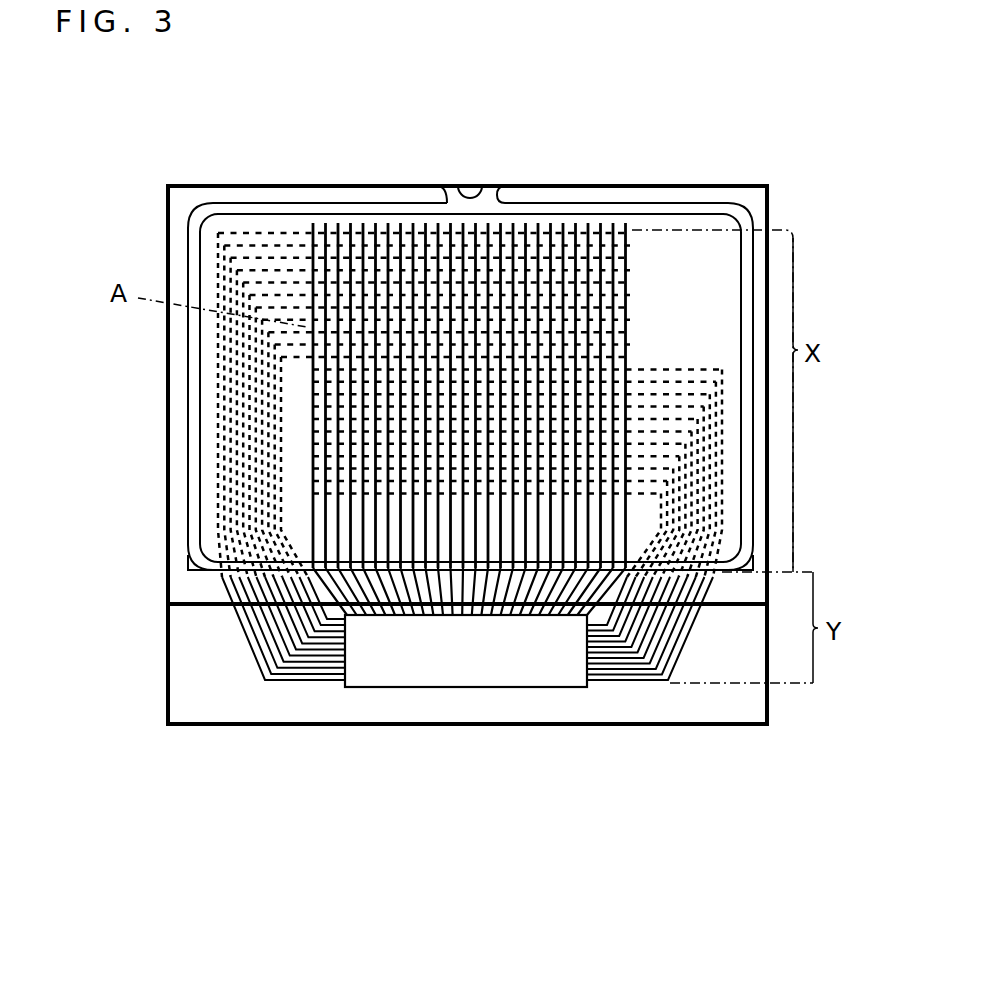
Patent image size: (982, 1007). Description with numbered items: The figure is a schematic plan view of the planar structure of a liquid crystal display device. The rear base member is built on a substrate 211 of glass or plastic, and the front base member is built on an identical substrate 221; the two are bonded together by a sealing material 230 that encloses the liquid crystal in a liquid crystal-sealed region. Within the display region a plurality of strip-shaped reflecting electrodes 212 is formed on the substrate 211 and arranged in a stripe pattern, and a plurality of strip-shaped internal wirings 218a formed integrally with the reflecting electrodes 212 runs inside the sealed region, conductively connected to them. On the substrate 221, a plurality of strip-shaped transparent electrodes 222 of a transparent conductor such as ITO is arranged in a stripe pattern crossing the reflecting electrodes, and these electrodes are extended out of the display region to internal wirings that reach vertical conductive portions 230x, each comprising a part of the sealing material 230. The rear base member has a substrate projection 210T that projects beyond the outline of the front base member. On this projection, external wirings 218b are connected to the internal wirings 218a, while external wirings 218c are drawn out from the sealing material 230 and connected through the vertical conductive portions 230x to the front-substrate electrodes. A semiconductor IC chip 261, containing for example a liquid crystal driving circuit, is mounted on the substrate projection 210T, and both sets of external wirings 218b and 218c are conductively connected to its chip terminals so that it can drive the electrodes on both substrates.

The substrate 211 is at (207, 726).
The substrate projection 210T is at (160, 602).
The substrate 221 is at (668, 186).
The sealing material 230 is at (188, 400).
The vertical conductive portion 230x is at (225, 582).
The reflecting electrode 212 is at (307, 242).
The transparent electrode 222 is at (552, 235).
The internal wiring 218a is at (308, 532).
The external wiring 218b is at (290, 613).
The external wiring 218c is at (675, 662).
The semiconductor IC chip 261 is at (440, 688).